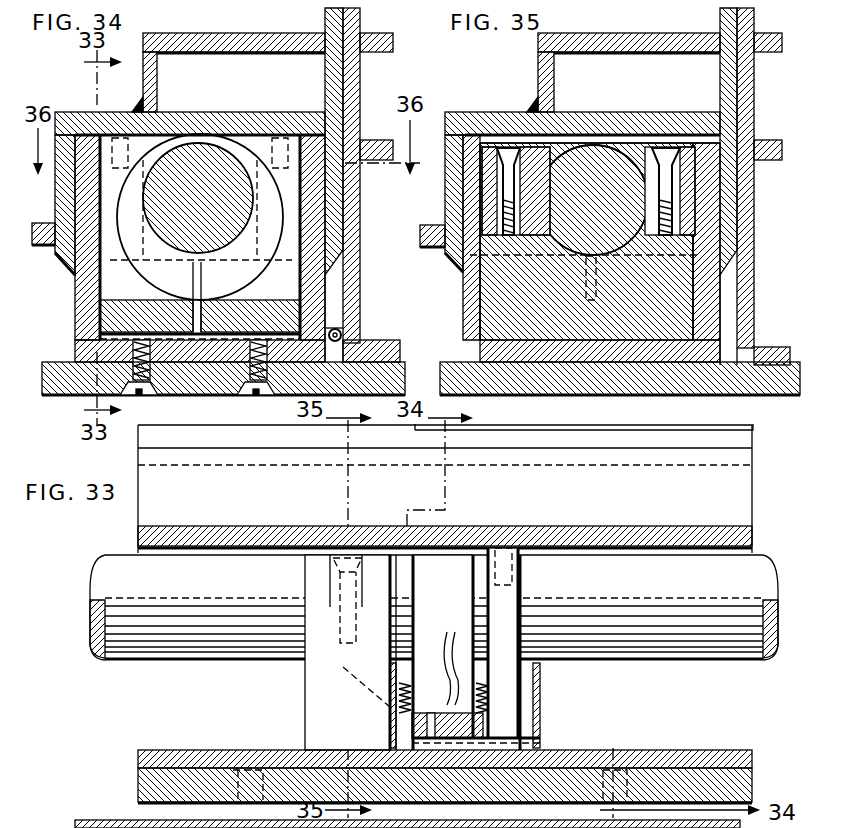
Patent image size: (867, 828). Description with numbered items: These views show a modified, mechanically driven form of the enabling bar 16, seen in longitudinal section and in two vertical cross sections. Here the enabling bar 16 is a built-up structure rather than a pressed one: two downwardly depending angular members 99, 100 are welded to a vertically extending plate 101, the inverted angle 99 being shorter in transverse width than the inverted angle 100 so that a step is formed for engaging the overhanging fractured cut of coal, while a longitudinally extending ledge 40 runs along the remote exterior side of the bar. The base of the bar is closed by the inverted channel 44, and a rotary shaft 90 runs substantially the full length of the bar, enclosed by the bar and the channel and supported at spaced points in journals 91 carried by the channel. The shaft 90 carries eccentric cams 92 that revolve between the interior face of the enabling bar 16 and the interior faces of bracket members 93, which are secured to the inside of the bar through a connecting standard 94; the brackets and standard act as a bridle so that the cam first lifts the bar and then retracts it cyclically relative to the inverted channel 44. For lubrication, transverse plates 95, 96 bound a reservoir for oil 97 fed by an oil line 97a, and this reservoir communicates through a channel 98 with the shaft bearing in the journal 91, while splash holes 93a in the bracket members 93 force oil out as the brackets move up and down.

In FIG. 34, the enabling bar 16 is at (87, 110).
In FIG. 35, the enabling bar 16 is at (512, 110).
In FIG. 34, the ledge 40 is at (52, 223).
In FIG. 35, the ledge 40 is at (431, 224).
In FIG. 34, the inverted channel 44 is at (75, 285).
In FIG. 35, the inverted channel 44 is at (466, 329).
In FIG. 33, the inverted channel 44 is at (678, 757).
In FIG. 34, the rotary shaft 90 is at (220, 167).
In FIG. 35, the rotary shaft 90 is at (642, 170).
In FIG. 33, the rotary shaft 90 is at (113, 663).
In FIG. 35, the journal 91 is at (527, 158).
In FIG. 33, the journal 91 is at (312, 573).
In FIG. 34, the eccentric cam 92 is at (187, 293).
In FIG. 33, the eccentric cam 92 is at (447, 573).
In FIG. 34, the bracket member 93 is at (120, 322).
In FIG. 33, the bracket member 93 is at (503, 727).
In FIG. 34, the splash hole 93a is at (199, 300).
In FIG. 33, the splash hole 93a is at (453, 641).
In FIG. 34, the connecting standard 94 is at (283, 277).
In FIG. 33, the connecting standard 94 is at (503, 617).
In FIG. 33, the transverse plate 95 is at (390, 730).
In FIG. 33, the transverse plate 96 is at (543, 678).
In FIG. 34, the reservoir for oil 97 is at (82, 358).
In FIG. 33, the reservoir for oil 97 is at (543, 697).
In FIG. 34, the oil line 97a is at (336, 328).
In FIG. 33, the oil line 97a is at (396, 721).
In FIG. 35, the channel 98 is at (590, 263).
In FIG. 33, the channel 98 is at (338, 690).
In FIG. 34, the inverted angle 99 is at (236, 36).
In FIG. 35, the inverted angle 99 is at (620, 36).
In FIG. 33, the inverted angle 99 is at (613, 457).
In FIG. 34, the inverted angle 100 is at (192, 113).
In FIG. 35, the inverted angle 100 is at (590, 125).
In FIG. 33, the inverted angle 100 is at (634, 535).
In FIG. 34, the vertically extending plate 101 is at (346, 15).
In FIG. 35, the vertically extending plate 101 is at (744, 14).